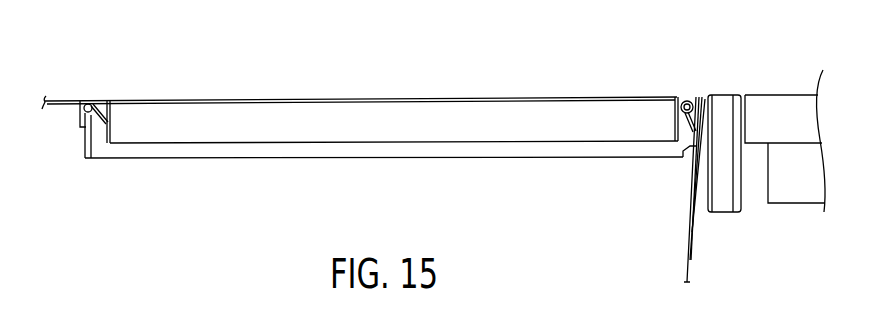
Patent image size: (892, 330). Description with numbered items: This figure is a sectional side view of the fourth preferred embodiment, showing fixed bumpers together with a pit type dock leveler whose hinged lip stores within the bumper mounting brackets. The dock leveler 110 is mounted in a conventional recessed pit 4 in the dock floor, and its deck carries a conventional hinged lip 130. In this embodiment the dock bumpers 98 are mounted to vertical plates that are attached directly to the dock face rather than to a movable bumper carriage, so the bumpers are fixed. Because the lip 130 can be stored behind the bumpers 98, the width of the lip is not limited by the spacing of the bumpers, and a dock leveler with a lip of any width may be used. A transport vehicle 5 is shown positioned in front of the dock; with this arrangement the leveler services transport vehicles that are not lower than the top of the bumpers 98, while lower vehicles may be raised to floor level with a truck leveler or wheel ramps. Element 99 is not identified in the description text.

The dock leveler 110 is at (518, 97).
The recessed pit 4 is at (518, 157).
The hinge strut 99 is at (704, 217).
The hinged lip 130 is at (697, 243).
The dock bumper 98 is at (723, 95).
The transport vehicle 5 is at (772, 95).